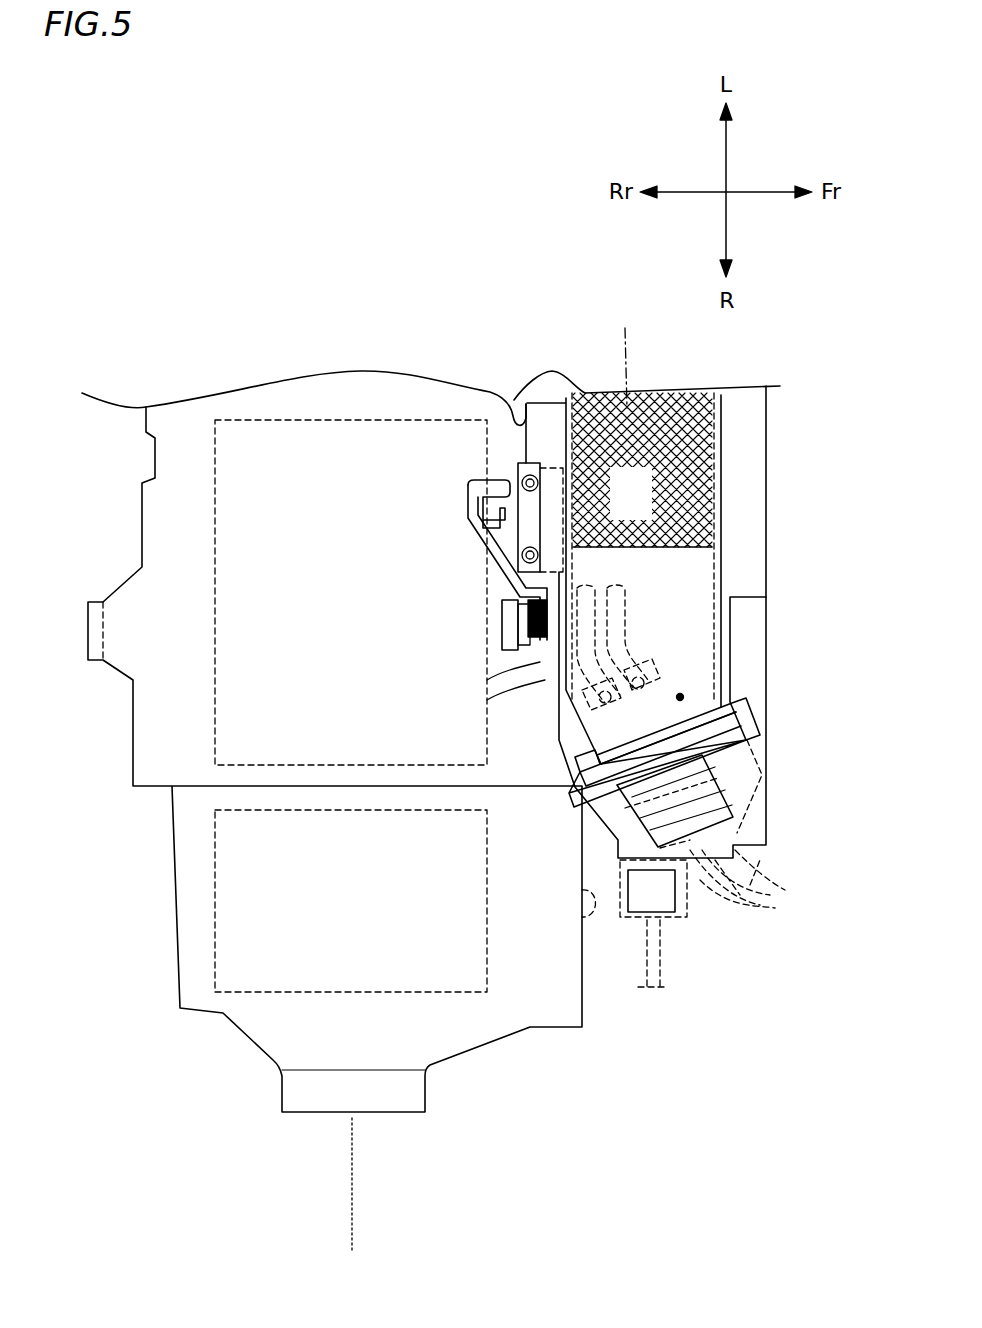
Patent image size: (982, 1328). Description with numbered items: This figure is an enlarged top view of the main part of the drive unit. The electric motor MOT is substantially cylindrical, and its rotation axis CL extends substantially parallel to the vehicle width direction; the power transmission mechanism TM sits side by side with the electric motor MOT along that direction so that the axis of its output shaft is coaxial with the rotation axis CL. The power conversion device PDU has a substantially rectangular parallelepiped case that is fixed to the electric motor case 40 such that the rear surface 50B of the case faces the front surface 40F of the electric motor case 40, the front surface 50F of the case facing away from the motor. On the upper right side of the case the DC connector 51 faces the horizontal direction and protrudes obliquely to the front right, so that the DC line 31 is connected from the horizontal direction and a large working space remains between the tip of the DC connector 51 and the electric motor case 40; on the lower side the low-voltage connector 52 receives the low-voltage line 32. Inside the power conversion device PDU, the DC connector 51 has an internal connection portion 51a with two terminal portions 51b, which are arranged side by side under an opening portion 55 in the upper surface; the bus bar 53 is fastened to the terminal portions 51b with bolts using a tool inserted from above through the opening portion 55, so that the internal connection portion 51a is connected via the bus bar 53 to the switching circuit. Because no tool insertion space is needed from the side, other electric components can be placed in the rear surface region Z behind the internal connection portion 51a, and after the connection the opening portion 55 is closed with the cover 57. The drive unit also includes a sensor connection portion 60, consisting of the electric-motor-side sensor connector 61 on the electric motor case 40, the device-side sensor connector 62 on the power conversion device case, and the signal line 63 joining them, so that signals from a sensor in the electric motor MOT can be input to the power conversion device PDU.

The DC line 31 is at (780, 907).
The low-voltage line 32 is at (672, 963).
The electric motor case 40 is at (125, 615).
The front surface of the electric motor case 40F is at (580, 895).
The rear surface of the power conversion device case 50B is at (530, 398).
The front surface of the power conversion device case 50F is at (760, 600).
The DC connector 51 is at (728, 800).
The internal connection portion 51a is at (683, 697).
The terminal portions 51b is at (652, 660).
The low-voltage connector 52 is at (668, 903).
The bus bar 53 is at (593, 590).
The opening portion 55 is at (679, 392).
The cover 57 is at (723, 507).
The sensor connection portion 60 is at (518, 559).
The electric-motor-side sensor connector 61 is at (503, 612).
The device-side sensor connector 62 is at (518, 528).
The signal line 63 is at (485, 525).
The electric motor MOT is at (215, 488).
The power transmission mechanism TM is at (228, 915).
The power conversion device PDU is at (738, 447).
The rotation axis CL is at (362, 1200).
The rear surface region Z is at (621, 356).